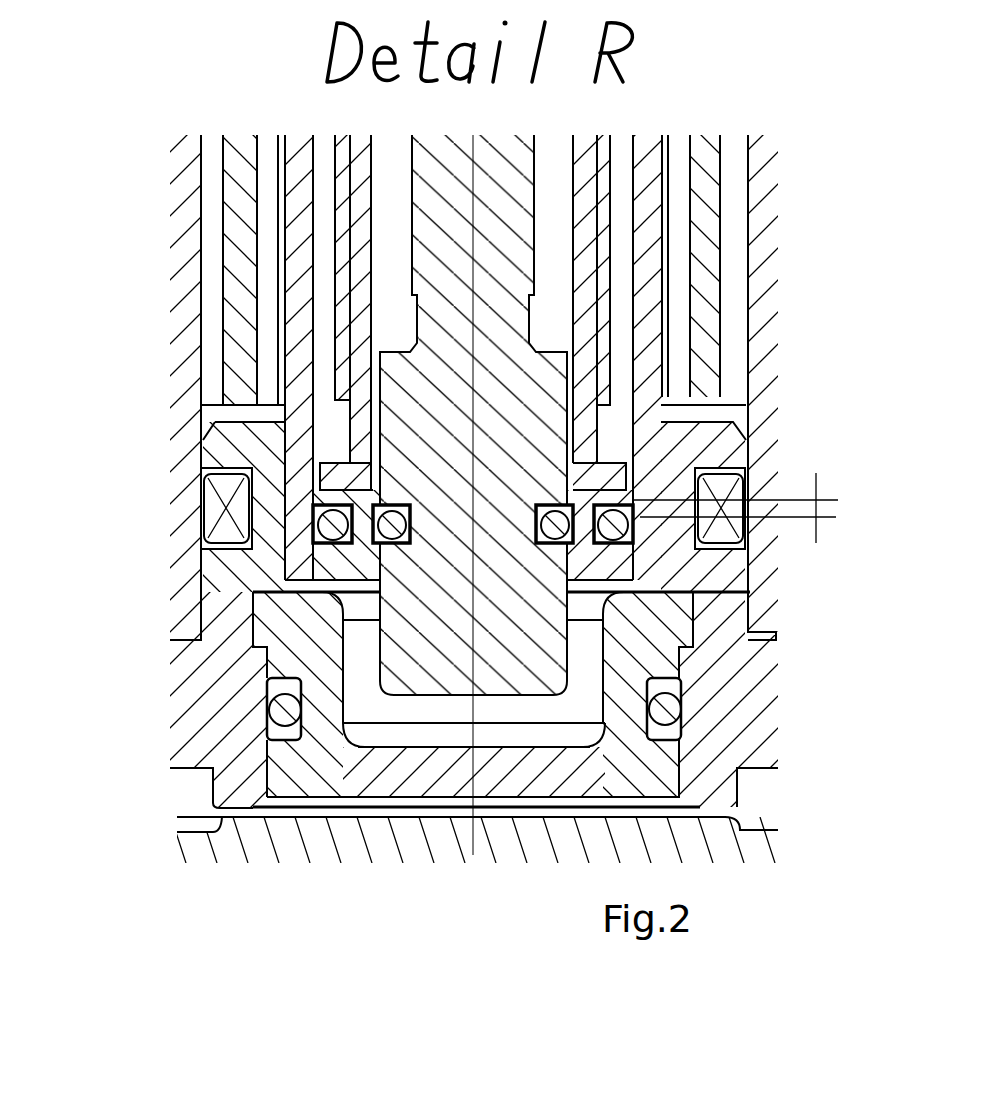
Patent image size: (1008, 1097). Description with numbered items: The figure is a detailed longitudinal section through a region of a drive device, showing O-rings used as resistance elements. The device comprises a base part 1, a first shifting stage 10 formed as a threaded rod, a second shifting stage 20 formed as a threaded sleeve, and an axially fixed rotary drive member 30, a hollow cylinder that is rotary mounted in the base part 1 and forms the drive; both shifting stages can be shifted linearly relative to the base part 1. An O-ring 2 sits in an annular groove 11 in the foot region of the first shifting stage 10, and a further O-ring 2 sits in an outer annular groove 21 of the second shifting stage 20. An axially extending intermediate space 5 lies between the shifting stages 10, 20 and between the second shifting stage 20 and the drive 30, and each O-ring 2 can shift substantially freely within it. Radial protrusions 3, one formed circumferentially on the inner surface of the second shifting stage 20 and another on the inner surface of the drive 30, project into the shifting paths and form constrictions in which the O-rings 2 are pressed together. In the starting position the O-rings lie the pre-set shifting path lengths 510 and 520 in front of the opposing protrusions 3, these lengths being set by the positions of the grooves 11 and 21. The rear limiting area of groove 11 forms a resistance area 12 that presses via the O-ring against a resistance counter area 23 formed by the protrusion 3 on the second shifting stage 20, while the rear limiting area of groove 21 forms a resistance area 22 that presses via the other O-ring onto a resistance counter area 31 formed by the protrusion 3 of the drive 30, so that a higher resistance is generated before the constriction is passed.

The base part 1 is at (763, 170).
The O-ring 2 is at (605, 543).
The radial protrusion 3 is at (633, 490).
The intermediate space 5 is at (623, 368).
The first shifting stage 10 is at (513, 155).
The annular groove 11 is at (368, 366).
The resistance area 12 is at (380, 597).
The second shifting stage 20 is at (582, 160).
The outer annular groove 21 is at (382, 358).
The resistance area 22 is at (322, 543).
The resistance counter area 23 is at (635, 492).
The rotary drive member 30 is at (647, 190).
The resistance counter area 31 is at (310, 490).
The pre-set shifting path length 510 is at (754, 508).
The pre-set shifting path length 520 is at (756, 521).